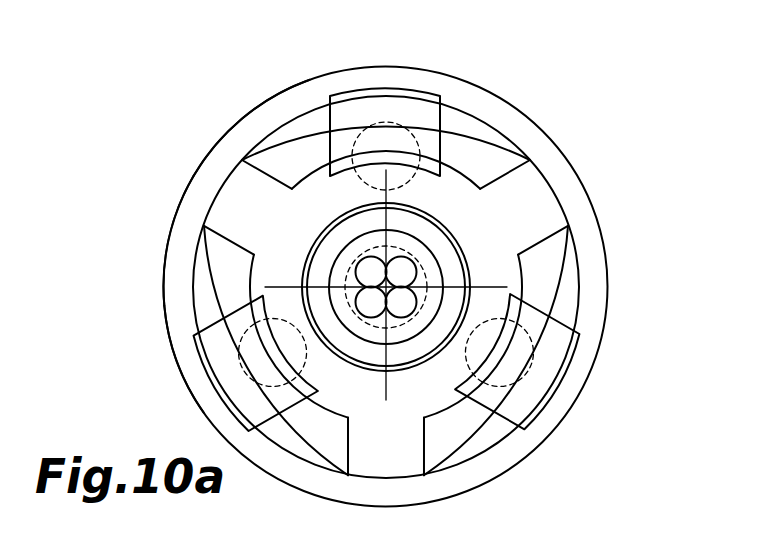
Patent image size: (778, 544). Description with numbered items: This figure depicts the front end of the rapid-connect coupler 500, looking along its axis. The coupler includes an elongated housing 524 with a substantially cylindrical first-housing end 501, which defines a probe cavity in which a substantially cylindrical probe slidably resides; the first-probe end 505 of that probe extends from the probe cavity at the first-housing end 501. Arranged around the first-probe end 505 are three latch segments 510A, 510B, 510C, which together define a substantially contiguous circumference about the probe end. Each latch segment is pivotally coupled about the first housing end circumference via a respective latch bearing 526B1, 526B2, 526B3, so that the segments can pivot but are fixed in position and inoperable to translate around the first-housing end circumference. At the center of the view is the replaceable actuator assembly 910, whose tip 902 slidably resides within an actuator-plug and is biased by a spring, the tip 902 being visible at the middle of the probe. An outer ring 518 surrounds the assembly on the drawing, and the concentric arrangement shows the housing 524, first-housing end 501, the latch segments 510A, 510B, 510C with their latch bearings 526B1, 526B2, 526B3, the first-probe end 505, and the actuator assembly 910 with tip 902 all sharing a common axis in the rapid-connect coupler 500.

The rapid-connect coupler 500 is at (546, 60).
The first-housing end 501 is at (206, 100).
The first-probe end 505 is at (148, 316).
The latch segment 510A is at (580, 270).
The latch segment 510B is at (307, 107).
The latch segment 510C is at (183, 270).
The outer rim 518 is at (190, 160).
The housing 524 is at (542, 194).
The latch bearing 526B1 is at (390, 117).
The latch bearing 526B2 is at (536, 366).
The latch bearing 526B3 is at (236, 392).
The tip 902 is at (423, 257).
The actuator assembly 910 is at (357, 260).